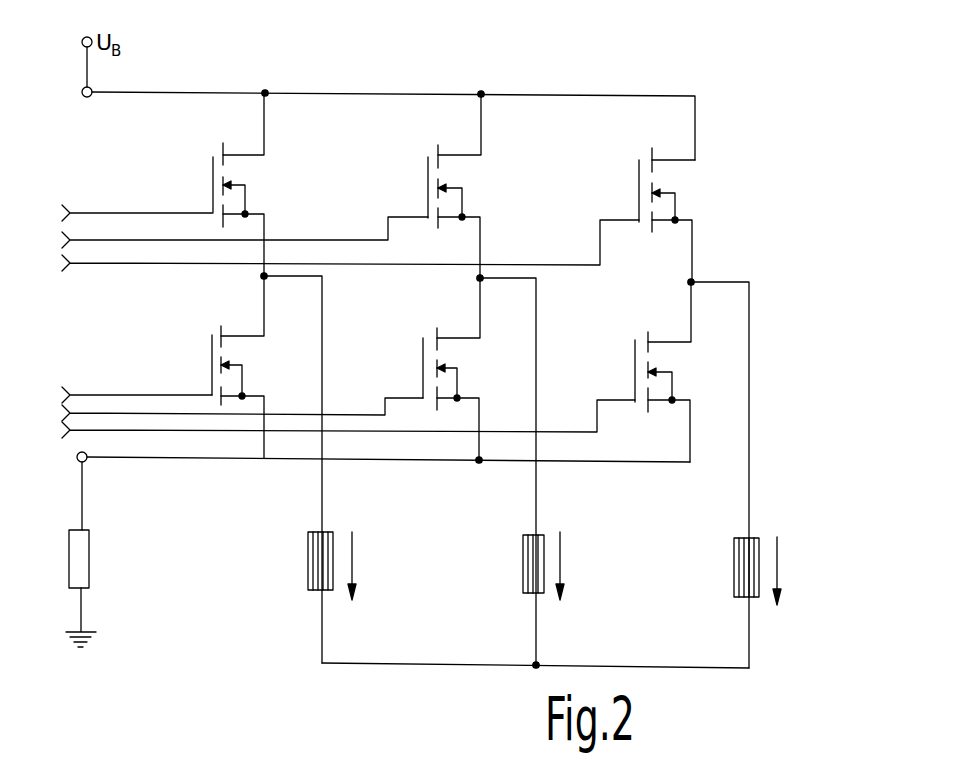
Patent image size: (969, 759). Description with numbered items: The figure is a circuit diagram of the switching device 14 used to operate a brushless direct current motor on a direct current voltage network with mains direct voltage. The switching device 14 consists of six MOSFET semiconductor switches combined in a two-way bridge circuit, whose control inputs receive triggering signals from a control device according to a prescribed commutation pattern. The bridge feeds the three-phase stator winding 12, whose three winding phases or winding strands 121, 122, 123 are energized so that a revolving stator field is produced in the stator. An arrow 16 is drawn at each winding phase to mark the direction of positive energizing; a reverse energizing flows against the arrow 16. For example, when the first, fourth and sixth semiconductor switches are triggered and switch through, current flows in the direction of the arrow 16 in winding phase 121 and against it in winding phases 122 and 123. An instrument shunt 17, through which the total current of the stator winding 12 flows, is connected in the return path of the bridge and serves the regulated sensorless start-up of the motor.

The switching device 14 is at (532, 147).
The three-phase stator winding 12 is at (513, 671).
The instrument shunt 17 is at (86, 553).
The winding phase 121 is at (308, 572).
The winding phase 122 is at (523, 568).
The winding phase 123 is at (734, 578).
The arrow 16 is at (352, 558).